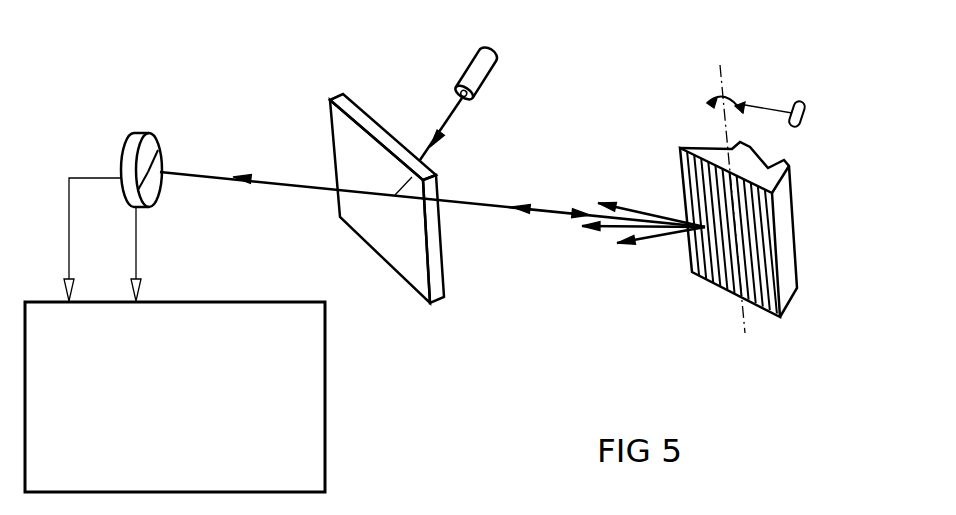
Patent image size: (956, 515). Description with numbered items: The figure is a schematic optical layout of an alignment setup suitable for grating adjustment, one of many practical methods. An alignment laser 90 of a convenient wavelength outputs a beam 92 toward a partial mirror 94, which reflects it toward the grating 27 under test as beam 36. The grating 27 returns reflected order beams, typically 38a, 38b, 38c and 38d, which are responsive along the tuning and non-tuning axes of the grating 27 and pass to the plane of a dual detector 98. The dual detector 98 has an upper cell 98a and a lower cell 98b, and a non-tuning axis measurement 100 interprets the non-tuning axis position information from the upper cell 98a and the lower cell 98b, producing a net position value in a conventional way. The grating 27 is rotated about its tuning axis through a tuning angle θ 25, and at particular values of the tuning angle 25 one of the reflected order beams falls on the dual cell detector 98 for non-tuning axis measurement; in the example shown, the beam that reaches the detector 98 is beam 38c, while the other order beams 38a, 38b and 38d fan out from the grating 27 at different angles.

The tuning angle θ 25 is at (815, 189).
The grating 27 is at (793, 229).
The beam 36 is at (480, 202).
The reflected order beam 38a is at (622, 290).
The reflected order beam 38b is at (622, 268).
The reflected order beam 38c is at (577, 160).
The reflected order beam 38d is at (646, 157).
The alignment laser 90 is at (545, 53).
The beam 92 is at (418, 108).
The partial mirror 94 is at (387, 210).
The dual detector 98 is at (123, 96).
The upper cell 98a is at (204, 108).
The lower cell 98b is at (207, 231).
The non-tuning axis measurement 100 is at (231, 397).